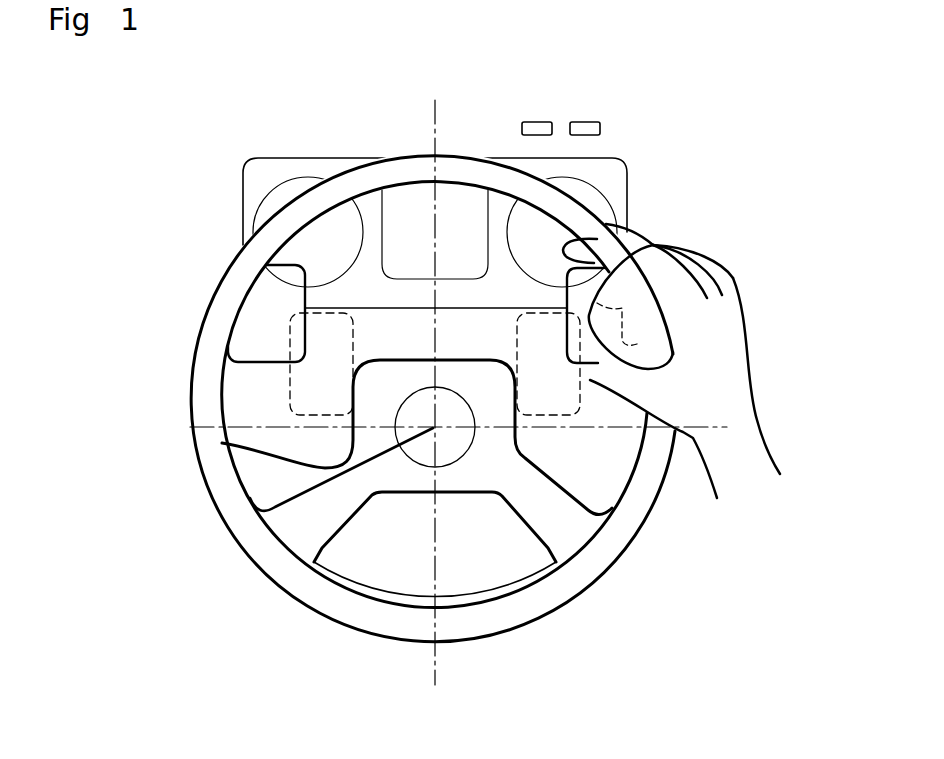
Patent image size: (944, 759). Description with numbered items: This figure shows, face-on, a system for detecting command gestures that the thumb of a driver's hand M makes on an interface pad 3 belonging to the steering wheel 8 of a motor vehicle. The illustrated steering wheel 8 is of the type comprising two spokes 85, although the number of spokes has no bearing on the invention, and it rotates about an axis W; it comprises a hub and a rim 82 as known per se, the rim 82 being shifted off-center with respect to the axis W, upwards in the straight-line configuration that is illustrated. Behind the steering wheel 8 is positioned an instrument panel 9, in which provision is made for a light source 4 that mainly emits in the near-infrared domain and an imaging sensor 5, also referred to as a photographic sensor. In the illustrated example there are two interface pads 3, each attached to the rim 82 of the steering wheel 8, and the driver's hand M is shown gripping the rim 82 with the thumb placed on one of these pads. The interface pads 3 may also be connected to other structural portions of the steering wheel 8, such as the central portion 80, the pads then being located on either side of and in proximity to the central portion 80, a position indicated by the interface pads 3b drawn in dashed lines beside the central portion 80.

The interface pad 3 is at (263, 295).
The interface pad 3b is at (307, 402).
The light source 4 is at (530, 119).
The imaging sensor 5 is at (591, 119).
The steering wheel 8 is at (228, 265).
The instrument panel 9 is at (238, 172).
The central portion 80 is at (386, 495).
The rim 82 is at (640, 492).
The spokes 85 is at (552, 523).
The hand M is at (733, 323).
The axis W is at (222, 443).